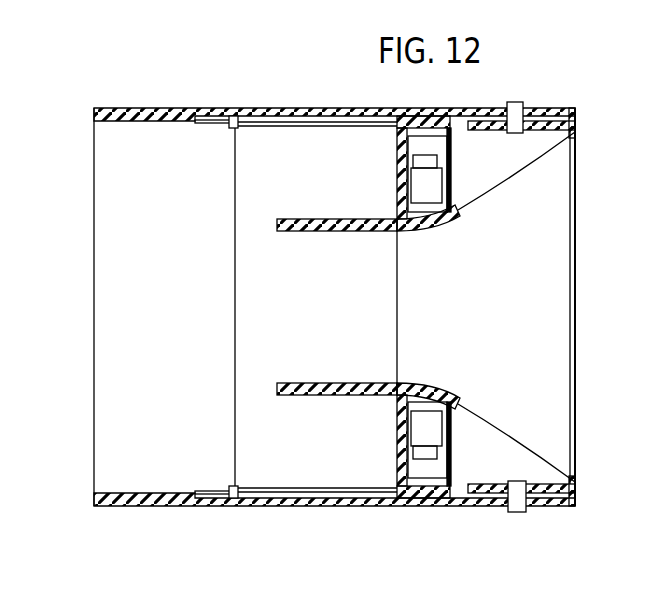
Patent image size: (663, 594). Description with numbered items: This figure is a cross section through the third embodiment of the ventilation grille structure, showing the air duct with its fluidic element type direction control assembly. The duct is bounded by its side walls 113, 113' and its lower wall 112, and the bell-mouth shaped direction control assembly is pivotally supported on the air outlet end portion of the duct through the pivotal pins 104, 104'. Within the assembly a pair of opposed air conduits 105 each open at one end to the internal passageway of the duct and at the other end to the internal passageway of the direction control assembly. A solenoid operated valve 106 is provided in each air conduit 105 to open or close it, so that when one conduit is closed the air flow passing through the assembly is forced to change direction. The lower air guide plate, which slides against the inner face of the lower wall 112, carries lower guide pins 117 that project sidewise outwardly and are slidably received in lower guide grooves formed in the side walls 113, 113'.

The lower wall 112 is at (100, 302).
The side wall 113 is at (334, 98).
The side wall 113' is at (334, 520).
The lower guide pin 117 is at (229, 124).
The pivotal pin 104 is at (530, 99).
The pivotal pin 104' is at (540, 507).
The air conduit 105 is at (447, 190).
The solenoid operated valve 106 is at (432, 178).